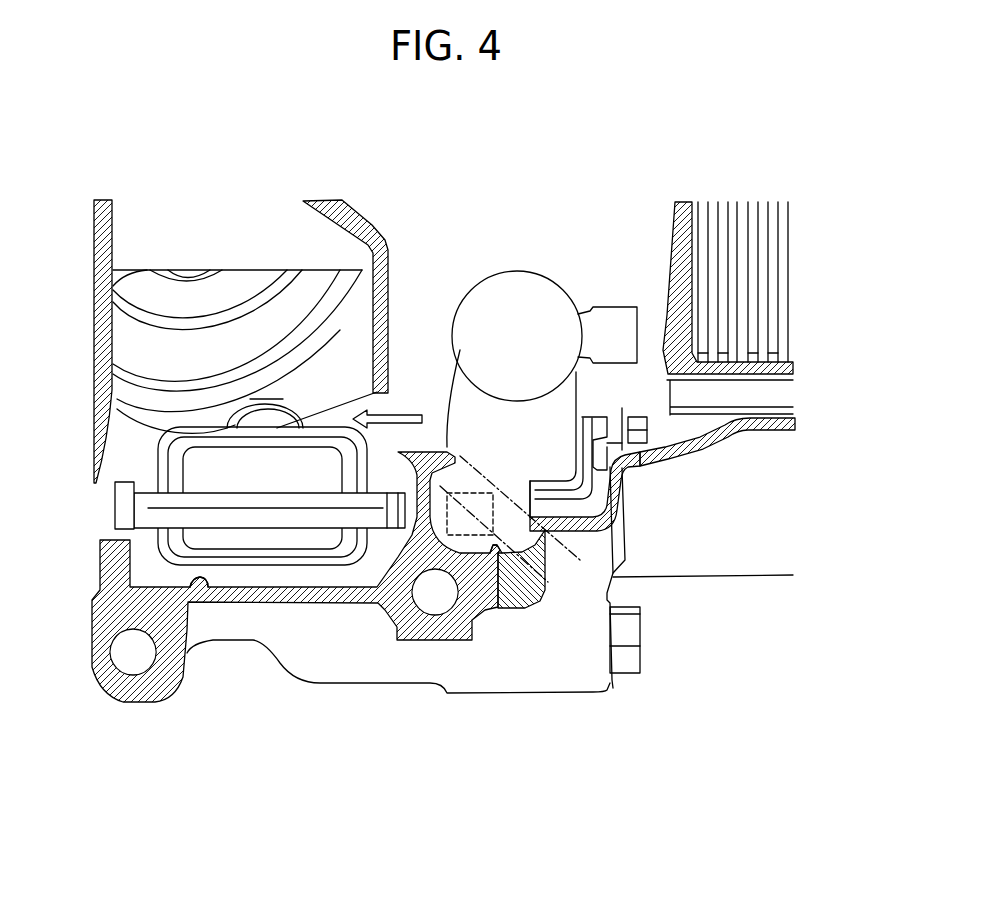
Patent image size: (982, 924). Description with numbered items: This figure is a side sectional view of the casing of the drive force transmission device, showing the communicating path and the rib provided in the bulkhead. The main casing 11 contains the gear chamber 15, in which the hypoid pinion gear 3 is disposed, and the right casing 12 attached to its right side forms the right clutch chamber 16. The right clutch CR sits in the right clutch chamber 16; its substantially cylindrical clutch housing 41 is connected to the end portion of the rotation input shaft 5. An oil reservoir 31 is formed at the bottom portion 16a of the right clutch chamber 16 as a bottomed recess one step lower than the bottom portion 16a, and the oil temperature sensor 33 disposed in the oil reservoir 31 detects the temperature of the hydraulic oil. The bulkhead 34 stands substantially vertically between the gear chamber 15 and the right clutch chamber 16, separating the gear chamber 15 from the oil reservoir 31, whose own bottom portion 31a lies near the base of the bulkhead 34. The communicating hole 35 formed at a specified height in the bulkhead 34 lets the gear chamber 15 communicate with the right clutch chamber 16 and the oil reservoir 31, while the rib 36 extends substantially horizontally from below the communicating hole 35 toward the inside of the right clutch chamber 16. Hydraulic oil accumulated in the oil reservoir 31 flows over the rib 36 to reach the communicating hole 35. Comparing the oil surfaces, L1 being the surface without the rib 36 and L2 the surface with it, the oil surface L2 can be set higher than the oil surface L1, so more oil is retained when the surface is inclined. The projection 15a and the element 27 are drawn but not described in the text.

The hypoid pinion gear 3 is at (277, 314).
The rotation input shaft 5 is at (188, 233).
The main casing 11 is at (435, 644).
The right casing 12 is at (747, 449).
The gear chamber 15 is at (323, 573).
The projection 15a is at (208, 588).
The right clutch chamber 16 is at (613, 381).
The bottom portion 16a is at (713, 427).
The shaft 27 is at (248, 573).
The oil reservoir 31 is at (505, 519).
The bottom portion 31a is at (498, 555).
The oil temperature sensor 33 is at (483, 493).
The bulkhead 34 is at (431, 512).
The communicating hole 35 is at (385, 407).
The rib 36 is at (512, 268).
The clutch housing 41 is at (670, 243).
The right clutch CR is at (738, 201).
The oil surface L1 is at (516, 549).
The oil surface L2 is at (536, 522).